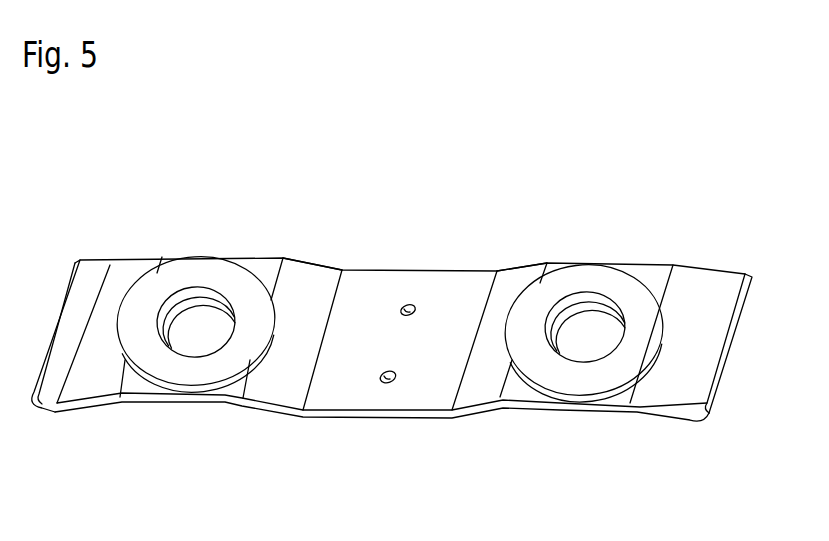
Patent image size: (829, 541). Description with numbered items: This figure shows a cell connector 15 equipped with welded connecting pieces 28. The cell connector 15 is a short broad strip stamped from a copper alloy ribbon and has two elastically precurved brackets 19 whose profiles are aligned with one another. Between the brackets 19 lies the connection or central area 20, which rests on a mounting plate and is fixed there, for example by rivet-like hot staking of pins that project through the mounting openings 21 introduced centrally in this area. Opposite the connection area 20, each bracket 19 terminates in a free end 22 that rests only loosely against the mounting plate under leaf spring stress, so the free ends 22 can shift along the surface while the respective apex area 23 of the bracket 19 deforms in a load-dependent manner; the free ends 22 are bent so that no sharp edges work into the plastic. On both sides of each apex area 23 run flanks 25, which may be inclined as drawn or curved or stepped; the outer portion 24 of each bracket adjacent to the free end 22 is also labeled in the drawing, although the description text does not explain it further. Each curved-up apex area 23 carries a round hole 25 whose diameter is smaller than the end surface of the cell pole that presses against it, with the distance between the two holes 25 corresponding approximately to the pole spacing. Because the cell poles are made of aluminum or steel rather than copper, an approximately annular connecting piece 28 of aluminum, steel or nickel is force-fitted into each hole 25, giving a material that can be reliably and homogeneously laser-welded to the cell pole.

The cell connector 15 is at (530, 172).
The bracket 19 is at (140, 403).
The connection or central area 20 is at (387, 270).
The mounting opening 21 is at (408, 304).
The free end 22 is at (53, 413).
The apex area 23 is at (221, 228).
The outer flat section 24 is at (110, 265).
The hole 25 is at (257, 348).
The connecting piece 28 is at (197, 371).